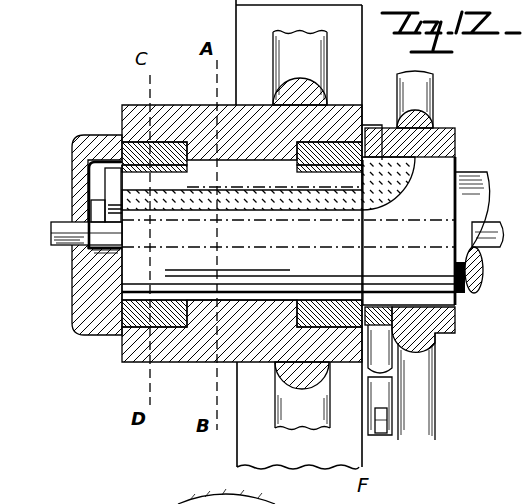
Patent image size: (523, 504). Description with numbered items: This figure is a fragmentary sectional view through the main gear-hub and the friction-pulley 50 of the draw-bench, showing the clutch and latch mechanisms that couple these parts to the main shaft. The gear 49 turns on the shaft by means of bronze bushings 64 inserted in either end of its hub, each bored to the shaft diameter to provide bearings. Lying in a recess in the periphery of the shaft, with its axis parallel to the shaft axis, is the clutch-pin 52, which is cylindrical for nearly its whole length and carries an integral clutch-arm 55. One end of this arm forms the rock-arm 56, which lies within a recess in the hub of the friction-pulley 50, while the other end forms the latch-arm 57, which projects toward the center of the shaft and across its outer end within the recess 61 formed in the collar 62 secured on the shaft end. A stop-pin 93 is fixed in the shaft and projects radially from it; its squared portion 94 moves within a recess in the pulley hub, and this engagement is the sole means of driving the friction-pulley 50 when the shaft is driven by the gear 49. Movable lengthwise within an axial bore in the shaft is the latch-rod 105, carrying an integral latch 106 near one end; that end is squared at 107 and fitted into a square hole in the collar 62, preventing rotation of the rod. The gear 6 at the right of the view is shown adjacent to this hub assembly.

The gear 49 is at (236, 8).
The bronze bushings 64 is at (140, 143).
The collar 62 is at (72, 170).
The recess 61 is at (98, 163).
The latch 106 is at (98, 210).
The squared portion 107 is at (60, 247).
The latch-rod 105 is at (112, 245).
The latch-arm 57 is at (115, 207).
The clutch-arm 55 is at (256, 183).
The clutch-pin 52 is at (337, 196).
The rock-arm 56 is at (368, 148).
The friction-pulley 50 is at (433, 76).
The squared portion 94 is at (390, 315).
The stop-pin 93 is at (393, 404).
The gear 6 is at (472, 175).